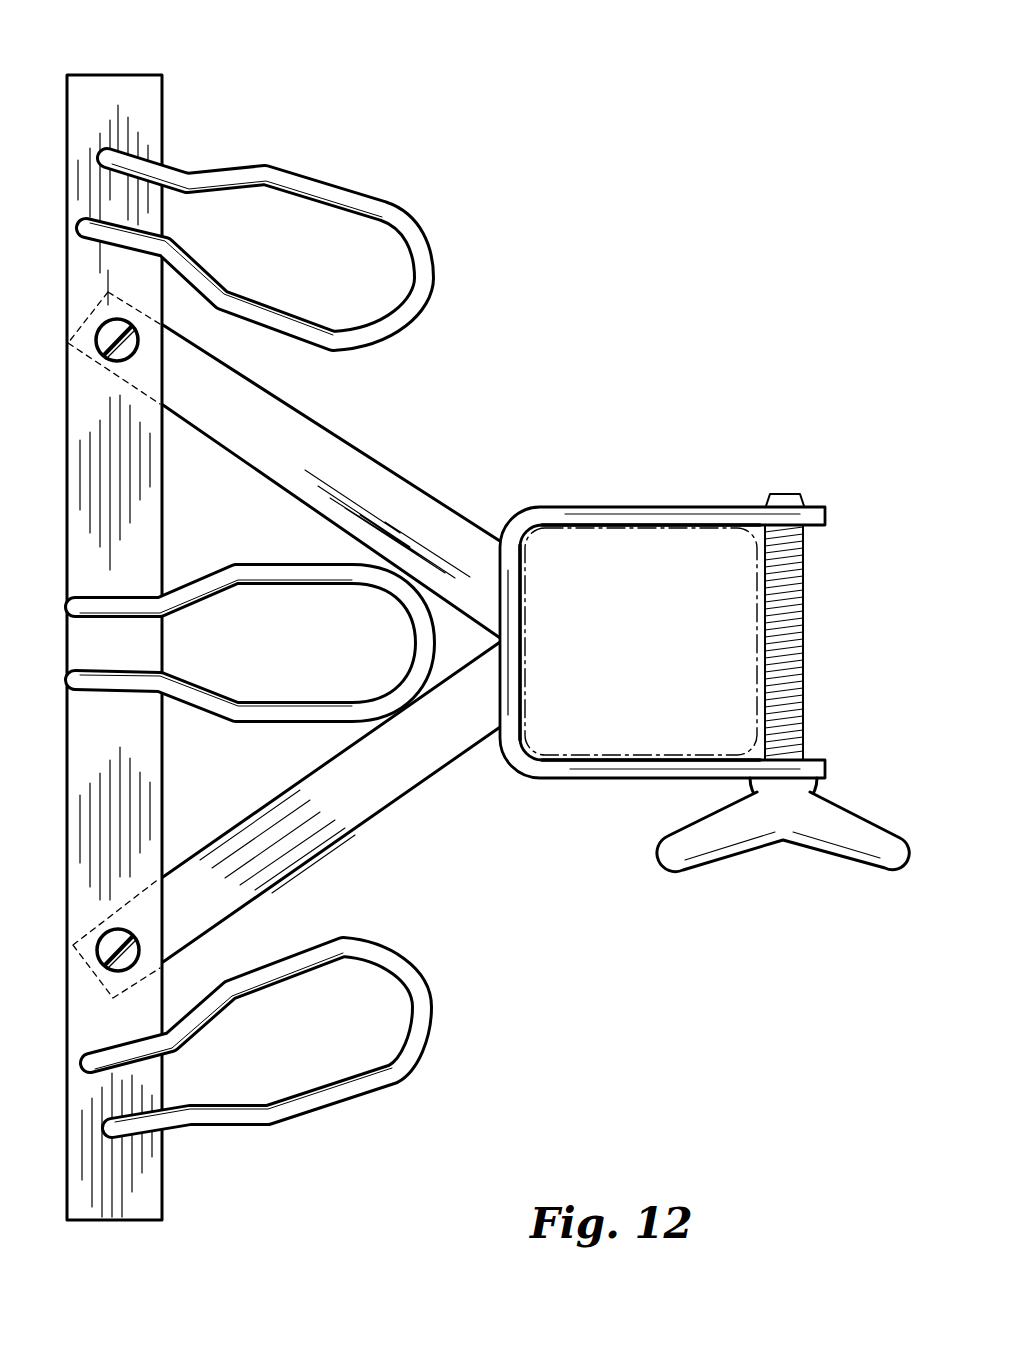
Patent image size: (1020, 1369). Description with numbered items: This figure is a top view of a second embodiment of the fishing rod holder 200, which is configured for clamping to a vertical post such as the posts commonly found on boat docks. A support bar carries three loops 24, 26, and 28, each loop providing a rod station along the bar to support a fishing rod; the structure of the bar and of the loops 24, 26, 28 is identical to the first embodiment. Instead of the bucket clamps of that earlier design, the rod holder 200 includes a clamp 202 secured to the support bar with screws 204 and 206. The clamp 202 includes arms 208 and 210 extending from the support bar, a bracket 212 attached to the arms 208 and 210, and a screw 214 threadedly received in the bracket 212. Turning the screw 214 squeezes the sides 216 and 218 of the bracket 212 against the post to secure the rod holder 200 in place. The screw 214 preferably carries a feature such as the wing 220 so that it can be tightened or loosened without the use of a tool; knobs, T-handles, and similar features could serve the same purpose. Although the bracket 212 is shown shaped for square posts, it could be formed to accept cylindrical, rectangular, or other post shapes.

The rod holder 200 is at (175, 83).
The loop 24 is at (338, 197).
The loop 26 is at (287, 720).
The loop 28 is at (395, 1073).
The clamp 202 is at (704, 655).
The screw 204 is at (137, 344).
The screw 206 is at (128, 958).
The arm 208 is at (325, 462).
The arm 210 is at (330, 823).
The bracket 212 is at (744, 513).
The screw 214 is at (805, 596).
The side 216 is at (558, 515).
The side 218 is at (560, 772).
The wing 220 is at (858, 842).